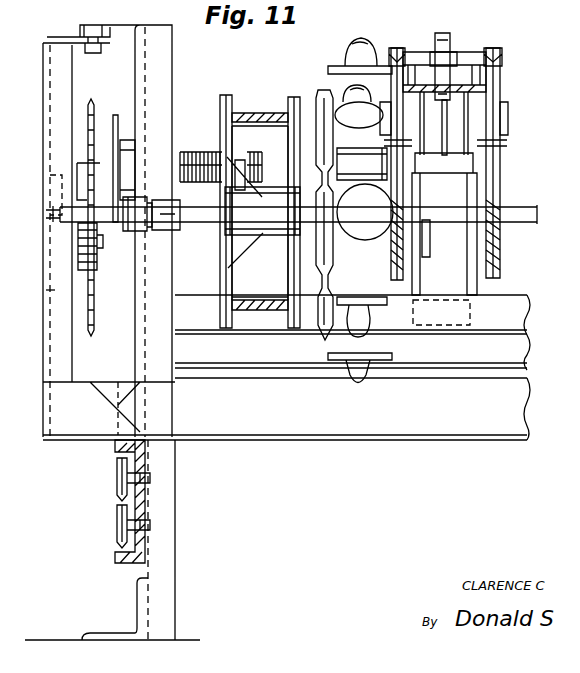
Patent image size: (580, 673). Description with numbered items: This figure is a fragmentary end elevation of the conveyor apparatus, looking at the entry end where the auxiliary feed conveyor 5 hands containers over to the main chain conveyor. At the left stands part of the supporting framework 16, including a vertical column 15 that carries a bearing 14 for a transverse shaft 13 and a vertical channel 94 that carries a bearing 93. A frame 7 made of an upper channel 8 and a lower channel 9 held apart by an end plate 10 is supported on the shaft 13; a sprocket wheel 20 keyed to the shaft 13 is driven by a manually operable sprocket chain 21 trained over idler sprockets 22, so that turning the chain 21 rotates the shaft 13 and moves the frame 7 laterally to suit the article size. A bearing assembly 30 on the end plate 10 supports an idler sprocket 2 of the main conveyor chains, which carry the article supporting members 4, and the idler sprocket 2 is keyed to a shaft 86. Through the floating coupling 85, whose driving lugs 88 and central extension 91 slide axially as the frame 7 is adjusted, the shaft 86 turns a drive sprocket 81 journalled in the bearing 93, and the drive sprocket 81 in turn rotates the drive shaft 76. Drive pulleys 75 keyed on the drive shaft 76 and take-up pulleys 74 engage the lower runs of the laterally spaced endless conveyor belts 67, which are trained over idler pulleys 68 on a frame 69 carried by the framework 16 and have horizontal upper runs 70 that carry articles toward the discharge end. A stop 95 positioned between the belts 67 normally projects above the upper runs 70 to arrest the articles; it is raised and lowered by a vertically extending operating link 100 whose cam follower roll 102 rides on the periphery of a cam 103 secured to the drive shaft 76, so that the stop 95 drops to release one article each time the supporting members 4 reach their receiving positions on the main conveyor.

The idler sprocket 2 is at (330, 258).
The article supporting member 4 is at (350, 52).
The auxiliary feed conveyor 5 is at (455, 164).
The frame 7 is at (248, 100).
The upper channel 8 is at (272, 112).
The lower channel 9 is at (263, 312).
The end plate 10 is at (222, 279).
The shaft 13 is at (200, 152).
The bearing 14 is at (149, 135).
The vertical column 15 is at (175, 499).
The supporting framework 16 is at (127, 565).
The sprocket wheel 20 is at (112, 120).
The sprocket chain 21 is at (118, 338).
The idler sprocket 22 is at (117, 487).
The bearing assembly 30 is at (266, 237).
The conveyor belt 67 is at (392, 276).
The idler pulley 68 is at (502, 92).
The frame 69 is at (458, 72).
The upper run 70 is at (395, 50).
The take-up pulley 74 is at (502, 141).
The drive pulley 75 is at (501, 188).
The drive shaft 76 is at (526, 223).
The drive sprocket 81 is at (90, 121).
The floating coupling 85 is at (160, 236).
The shaft 86 is at (196, 232).
The driving lug 88 is at (111, 225).
The extension 91 is at (48, 214).
The bearing 93 is at (55, 190).
The vertical channel 94 is at (50, 290).
The stop 95 is at (440, 35).
The operating link 100 is at (447, 138).
The cam follower roll 102 is at (438, 173).
The cam 103 is at (432, 245).